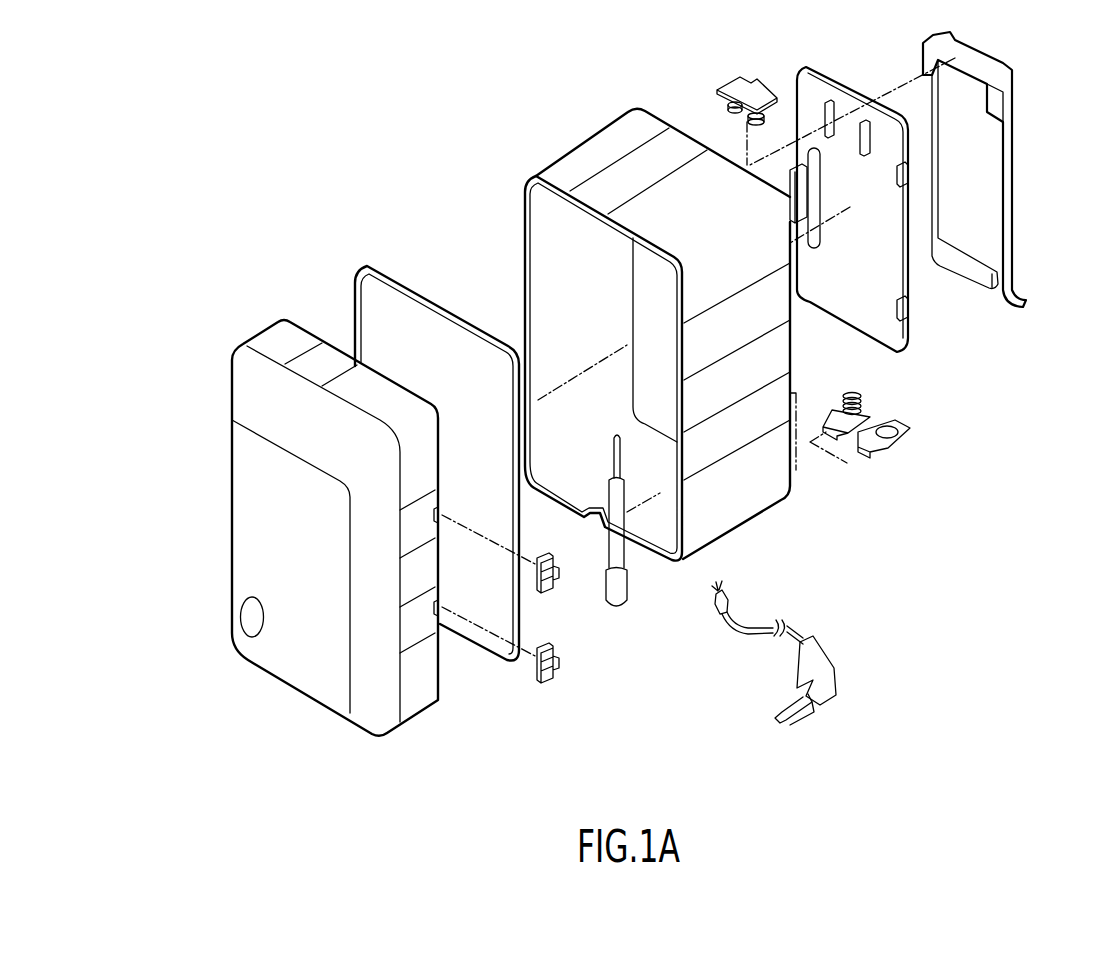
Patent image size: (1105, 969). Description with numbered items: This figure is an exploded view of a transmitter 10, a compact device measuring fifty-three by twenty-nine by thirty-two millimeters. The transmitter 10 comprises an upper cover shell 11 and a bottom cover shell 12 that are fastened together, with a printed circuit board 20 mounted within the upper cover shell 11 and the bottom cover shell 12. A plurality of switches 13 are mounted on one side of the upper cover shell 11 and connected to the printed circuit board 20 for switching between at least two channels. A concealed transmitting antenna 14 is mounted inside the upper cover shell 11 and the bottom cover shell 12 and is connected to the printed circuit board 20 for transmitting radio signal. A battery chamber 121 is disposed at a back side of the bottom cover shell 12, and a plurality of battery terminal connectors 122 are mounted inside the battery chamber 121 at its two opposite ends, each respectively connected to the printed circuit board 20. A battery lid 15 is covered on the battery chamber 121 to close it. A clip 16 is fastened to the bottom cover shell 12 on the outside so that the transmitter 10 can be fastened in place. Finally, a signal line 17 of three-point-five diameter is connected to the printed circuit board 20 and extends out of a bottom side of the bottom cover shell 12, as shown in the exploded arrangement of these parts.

The transmitter 10 is at (440, 197).
The upper cover shell 11 is at (232, 437).
The bottom cover shell 12 is at (583, 144).
The battery chamber 121 is at (793, 338).
The battery terminal connectors 122 is at (735, 87).
The switches 13 is at (555, 674).
The concealed transmitting antenna 14 is at (620, 609).
The battery lid 15 is at (908, 290).
The clip 16 is at (1012, 225).
The 3.5Ø signal line 17 is at (836, 678).
The printed circuit board 20 is at (355, 296).